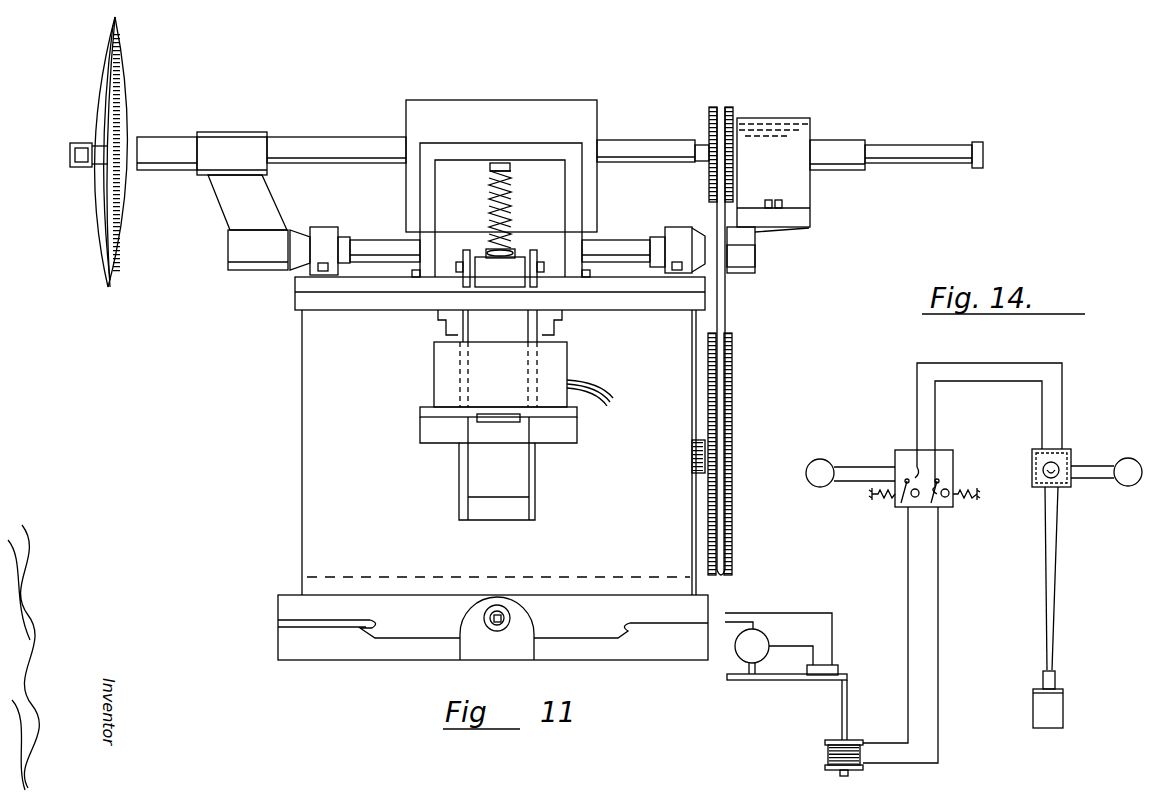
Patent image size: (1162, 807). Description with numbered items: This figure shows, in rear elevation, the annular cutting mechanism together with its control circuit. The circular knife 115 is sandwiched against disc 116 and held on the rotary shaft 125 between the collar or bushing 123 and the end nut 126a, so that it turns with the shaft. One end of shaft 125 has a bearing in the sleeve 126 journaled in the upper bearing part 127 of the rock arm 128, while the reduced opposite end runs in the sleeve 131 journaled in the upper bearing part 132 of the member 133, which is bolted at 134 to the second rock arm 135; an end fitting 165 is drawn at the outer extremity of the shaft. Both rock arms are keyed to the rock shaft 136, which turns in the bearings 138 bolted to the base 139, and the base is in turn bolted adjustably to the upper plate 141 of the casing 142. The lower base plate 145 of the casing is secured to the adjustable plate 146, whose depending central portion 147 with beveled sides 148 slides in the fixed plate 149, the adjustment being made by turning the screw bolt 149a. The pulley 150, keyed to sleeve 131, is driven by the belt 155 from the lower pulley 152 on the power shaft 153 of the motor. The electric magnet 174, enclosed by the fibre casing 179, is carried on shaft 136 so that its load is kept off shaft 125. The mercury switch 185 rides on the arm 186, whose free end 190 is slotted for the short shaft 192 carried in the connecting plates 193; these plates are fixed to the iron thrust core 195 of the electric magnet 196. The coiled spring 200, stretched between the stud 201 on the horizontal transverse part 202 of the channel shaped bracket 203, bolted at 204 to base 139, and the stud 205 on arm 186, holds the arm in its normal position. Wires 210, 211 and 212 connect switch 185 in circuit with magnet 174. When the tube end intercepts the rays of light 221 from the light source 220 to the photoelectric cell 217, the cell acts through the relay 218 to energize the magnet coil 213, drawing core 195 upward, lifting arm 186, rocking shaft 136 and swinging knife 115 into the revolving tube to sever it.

In FIG. 11, the circular knife 115 is at (108, 289).
In FIG. 11, the disc 116 is at (96, 201).
In FIG. 11, the collar or bushing 123 is at (140, 135).
In FIG. 11, the rotary shaft 125 is at (326, 137).
In FIG. 11, the sleeve 126 is at (183, 135).
In FIG. 11, the nut 126a is at (72, 146).
In FIG. 11, the upper bearing part 127 is at (233, 134).
In FIG. 11, the rock arm 128 is at (232, 210).
In FIG. 11, the sleeve 131 is at (845, 141).
In FIG. 11, the upper bearing part 132 is at (785, 120).
In FIG. 11, the member 133 is at (790, 182).
In FIG. 11, the bolts 134 is at (775, 200).
In FIG. 11, the rock arm 135 is at (752, 272).
In FIG. 11, the rock shaft 136 is at (378, 241).
In FIG. 11, the bearings 138 is at (325, 227).
In FIG. 11, the base 139 is at (296, 285).
In FIG. 11, the upper plate 141 is at (298, 311).
In FIG. 11, the casing 142 is at (302, 498).
In FIG. 11, the lower base plate 145 is at (307, 577).
In FIG. 11, the adjustable plate 146 is at (710, 598).
In FIG. 11, the depending central portion 147 is at (376, 655).
In FIG. 11, the beveled sides 148 is at (278, 621).
In FIG. 11, the plate 149 is at (717, 647).
In FIG. 11, the screw bolt 149a is at (506, 611).
In FIG. 11, the pulley 150 is at (735, 112).
In FIG. 11, the lower pulley 152 is at (736, 372).
In FIG. 11, the power shaft 153 is at (706, 466).
In FIG. 11, the belt 155 is at (729, 300).
In FIG. 11, the shaft end cap 165 is at (977, 142).
In FIG. 14, the electric magnet 174 is at (775, 655).
In FIG. 11, the fibre casing 179 is at (449, 100).
In FIG. 14, the mercury switch 185 is at (840, 670).
In FIG. 11, the arm 186 is at (480, 240).
In FIG. 14, the arm 186 is at (813, 681).
In FIG. 11, the free end 190 is at (500, 289).
In FIG. 14, the free end 190 is at (850, 678).
In FIG. 11, the short shaft 192 is at (583, 282).
In FIG. 11, the connecting plates 193 is at (459, 477).
In FIG. 11, the iron thrust core 195 is at (490, 522).
In FIG. 14, the iron thrust core 195 is at (842, 713).
In FIG. 11, the electric magnet 196 is at (434, 380).
In FIG. 11, the coiled spring 200 is at (513, 210).
In FIG. 11, the stud 201 is at (490, 170).
In FIG. 11, the horizontal transverse part 202 is at (542, 143).
In FIG. 11, the channel shaped bracket 203 is at (583, 198).
In FIG. 11, the bolts 204 is at (414, 282).
In FIG. 11, the stud 205 is at (513, 242).
In FIG. 11, the wire 210 is at (603, 394).
In FIG. 14, the wire 210 is at (742, 616).
In FIG. 11, the wire 211 is at (604, 407).
In FIG. 14, the wire 211 is at (805, 642).
In FIG. 14, the wire 212 is at (833, 646).
In FIG. 14, the magnet coil 213 is at (826, 762).
In FIG. 14, the photoelectric cell 217 is at (1032, 465).
In FIG. 14, the relay 218 is at (946, 450).
In FIG. 14, the light source 220 is at (1033, 710).
In FIG. 14, the rays of light 221 is at (1054, 578).